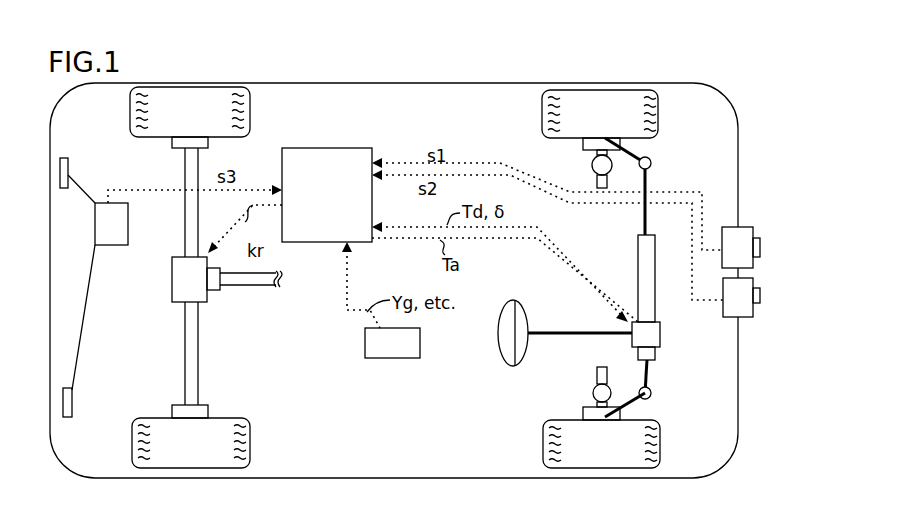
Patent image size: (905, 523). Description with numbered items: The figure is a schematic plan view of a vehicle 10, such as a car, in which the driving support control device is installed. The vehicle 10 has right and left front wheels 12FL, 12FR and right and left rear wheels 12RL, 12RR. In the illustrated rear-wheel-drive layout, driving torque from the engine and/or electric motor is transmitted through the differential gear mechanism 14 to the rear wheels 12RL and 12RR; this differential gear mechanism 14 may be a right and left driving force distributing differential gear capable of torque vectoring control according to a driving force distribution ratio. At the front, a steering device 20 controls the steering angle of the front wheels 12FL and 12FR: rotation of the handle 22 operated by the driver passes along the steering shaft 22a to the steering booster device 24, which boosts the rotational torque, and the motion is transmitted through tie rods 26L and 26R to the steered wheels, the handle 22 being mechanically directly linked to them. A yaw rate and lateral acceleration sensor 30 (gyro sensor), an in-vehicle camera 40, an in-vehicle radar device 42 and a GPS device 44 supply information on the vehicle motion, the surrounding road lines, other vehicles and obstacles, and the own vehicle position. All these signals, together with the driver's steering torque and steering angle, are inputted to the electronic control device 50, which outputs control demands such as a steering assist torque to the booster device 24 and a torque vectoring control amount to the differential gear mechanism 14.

The vehicle 10 is at (750, 142).
The left rear wheel 12RL is at (190, 117).
The right rear wheel 12RR is at (191, 436).
The left front wheel 12FL is at (600, 139).
The right front wheel 12FR is at (601, 417).
The differential gear mechanism 14 is at (200, 288).
The steering device 20 is at (660, 316).
The handle 22 is at (498, 333).
The steering shaft 22a is at (570, 331).
The steering booster device 24 is at (660, 334).
The left tie rod 26L is at (637, 151).
The right tie rod 26R is at (633, 398).
The yaw rate, lateral acceleration sensor 30 is at (392, 343).
The in-vehicle camera 40 is at (748, 256).
The in-vehicle radar device 42 is at (748, 306).
The GPS device 44 is at (122, 233).
The electronic control device 50 is at (338, 204).